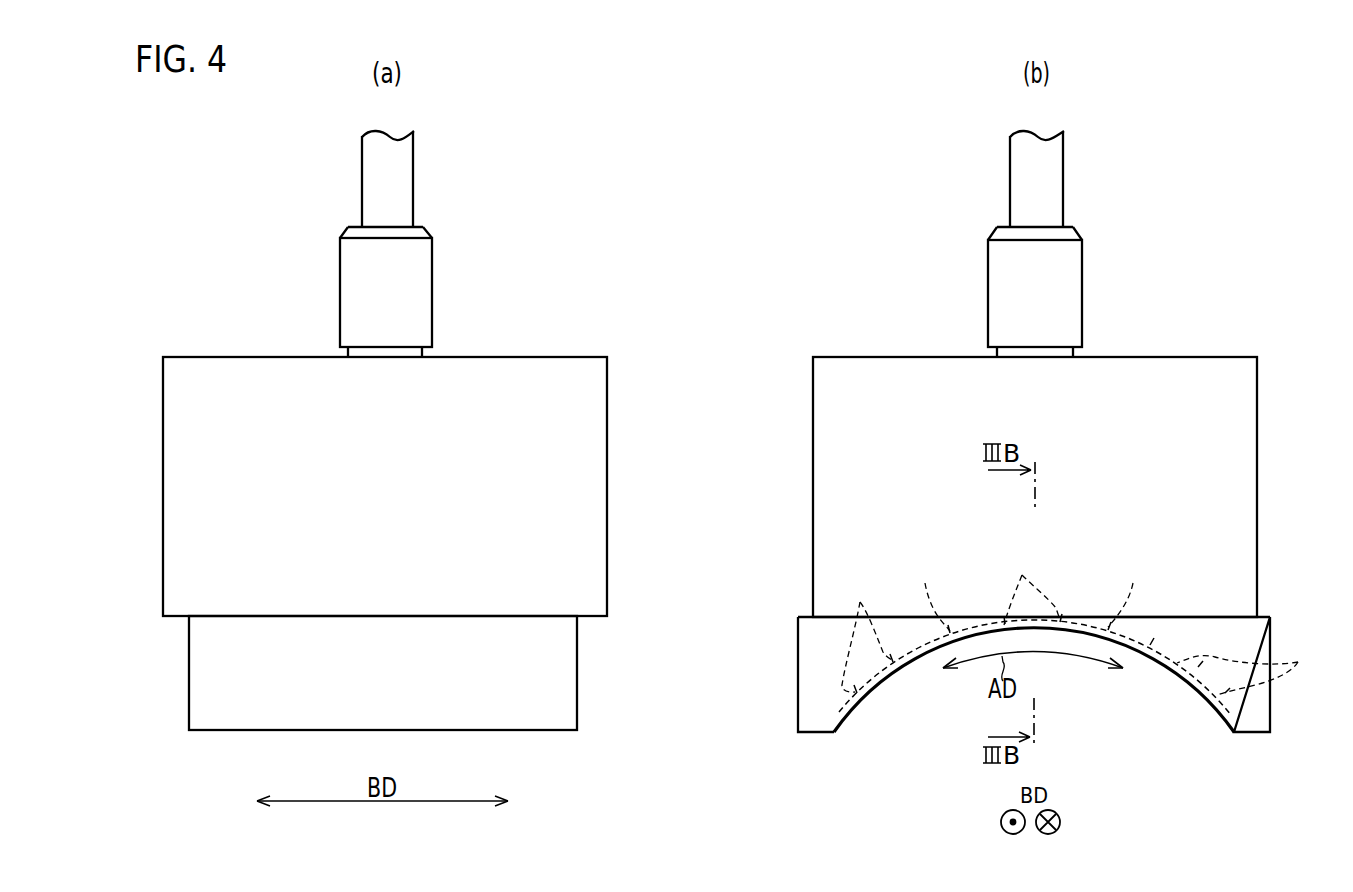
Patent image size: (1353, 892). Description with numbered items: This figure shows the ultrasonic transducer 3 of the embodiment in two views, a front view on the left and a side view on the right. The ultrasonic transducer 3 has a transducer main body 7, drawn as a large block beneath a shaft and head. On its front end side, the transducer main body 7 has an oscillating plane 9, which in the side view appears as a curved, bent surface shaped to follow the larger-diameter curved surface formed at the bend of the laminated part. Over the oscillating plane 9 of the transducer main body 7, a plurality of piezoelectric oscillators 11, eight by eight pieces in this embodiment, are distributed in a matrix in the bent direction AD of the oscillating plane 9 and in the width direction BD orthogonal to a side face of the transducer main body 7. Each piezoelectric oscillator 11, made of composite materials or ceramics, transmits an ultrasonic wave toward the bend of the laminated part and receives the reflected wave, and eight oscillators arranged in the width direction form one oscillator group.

The ultrasonic transducer 3 is at (538, 252).
The transducer main body 7 is at (607, 438).
The oscillating plane 9 is at (836, 724).
The piezoelectric oscillator 11 is at (865, 609).